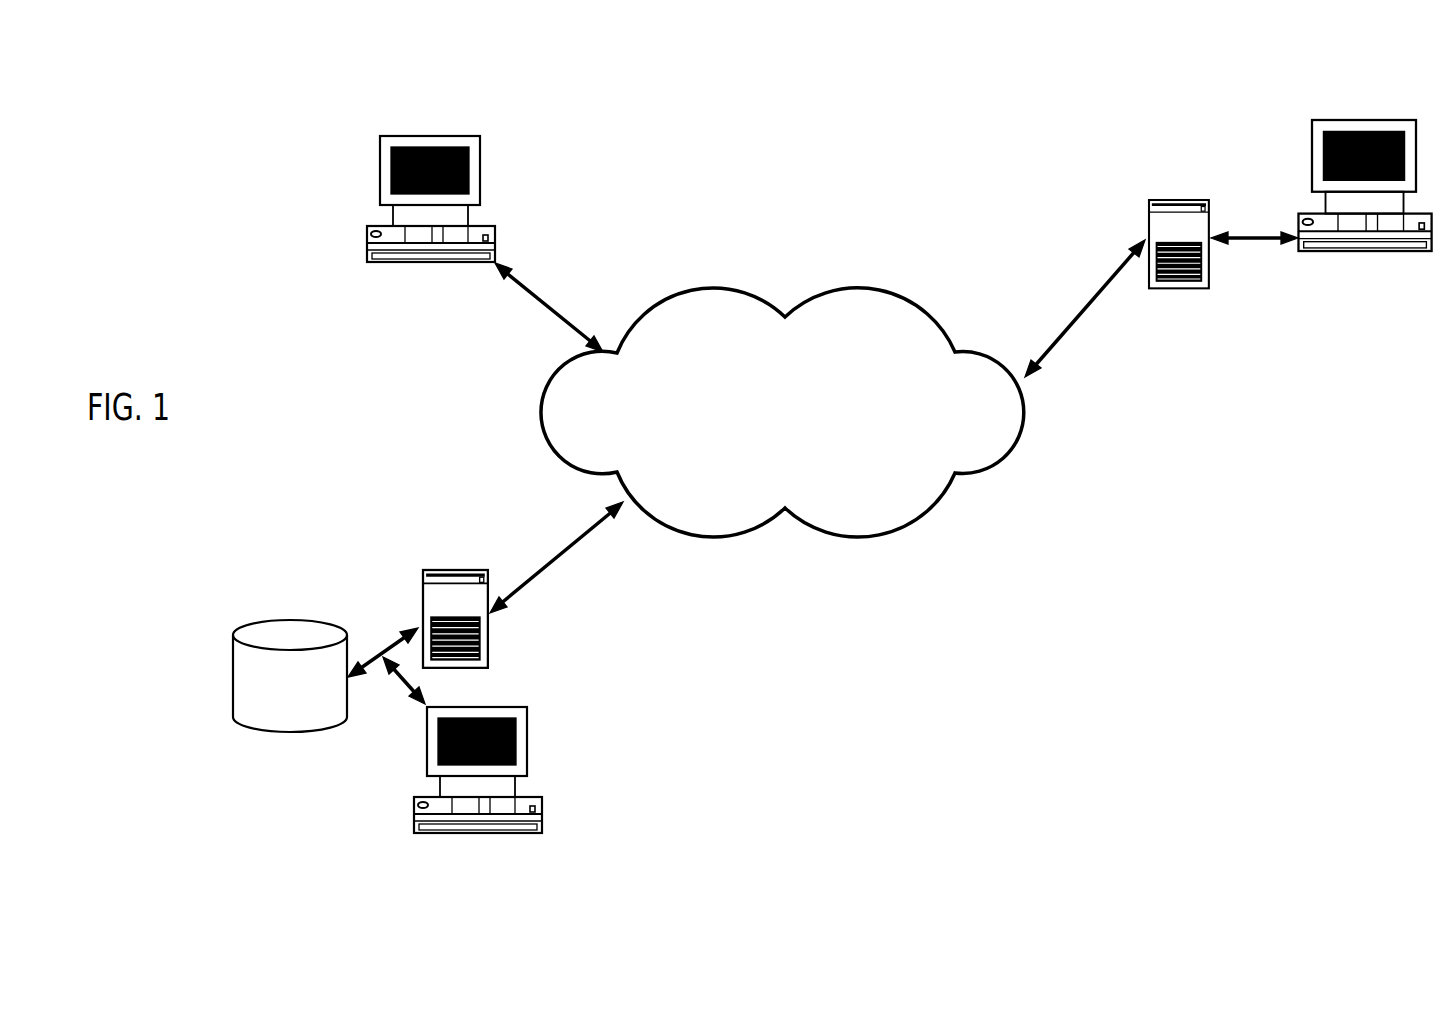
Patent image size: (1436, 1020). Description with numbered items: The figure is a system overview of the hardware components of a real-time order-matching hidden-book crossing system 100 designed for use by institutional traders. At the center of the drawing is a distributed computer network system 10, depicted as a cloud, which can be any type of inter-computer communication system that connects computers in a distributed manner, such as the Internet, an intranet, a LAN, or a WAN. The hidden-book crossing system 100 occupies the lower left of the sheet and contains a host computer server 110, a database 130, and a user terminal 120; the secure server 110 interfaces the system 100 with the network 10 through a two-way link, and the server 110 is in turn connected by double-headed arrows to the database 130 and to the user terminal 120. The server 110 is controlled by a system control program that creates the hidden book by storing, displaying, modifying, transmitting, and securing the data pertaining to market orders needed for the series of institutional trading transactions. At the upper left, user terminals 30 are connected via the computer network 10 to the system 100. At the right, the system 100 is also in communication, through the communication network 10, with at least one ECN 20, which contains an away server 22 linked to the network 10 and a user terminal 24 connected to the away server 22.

The distributed computer network system 10 is at (738, 403).
The ECN 20 is at (1265, 335).
The away server 22 is at (1183, 223).
The user terminal 24 is at (1365, 133).
The user terminals 30 is at (439, 147).
The hidden-book crossing system 100 is at (280, 492).
The host computer server 110 is at (455, 597).
The user terminal 120 is at (517, 737).
The database 130 is at (292, 632).